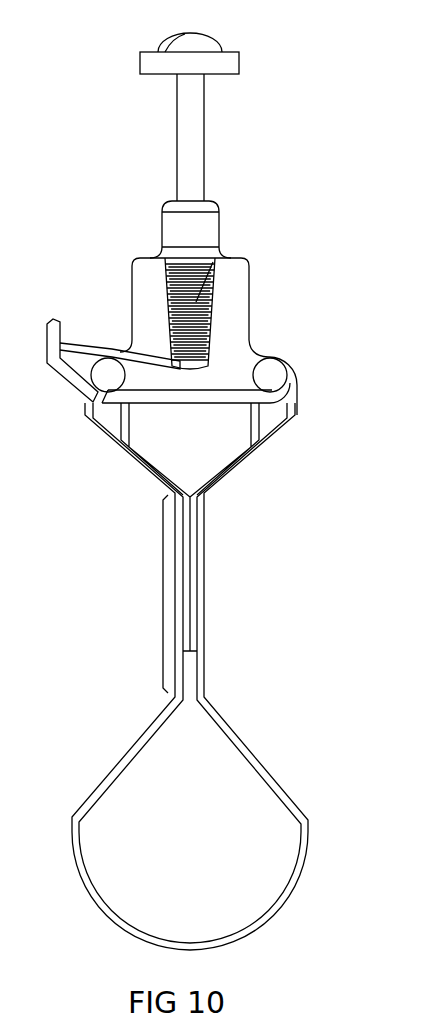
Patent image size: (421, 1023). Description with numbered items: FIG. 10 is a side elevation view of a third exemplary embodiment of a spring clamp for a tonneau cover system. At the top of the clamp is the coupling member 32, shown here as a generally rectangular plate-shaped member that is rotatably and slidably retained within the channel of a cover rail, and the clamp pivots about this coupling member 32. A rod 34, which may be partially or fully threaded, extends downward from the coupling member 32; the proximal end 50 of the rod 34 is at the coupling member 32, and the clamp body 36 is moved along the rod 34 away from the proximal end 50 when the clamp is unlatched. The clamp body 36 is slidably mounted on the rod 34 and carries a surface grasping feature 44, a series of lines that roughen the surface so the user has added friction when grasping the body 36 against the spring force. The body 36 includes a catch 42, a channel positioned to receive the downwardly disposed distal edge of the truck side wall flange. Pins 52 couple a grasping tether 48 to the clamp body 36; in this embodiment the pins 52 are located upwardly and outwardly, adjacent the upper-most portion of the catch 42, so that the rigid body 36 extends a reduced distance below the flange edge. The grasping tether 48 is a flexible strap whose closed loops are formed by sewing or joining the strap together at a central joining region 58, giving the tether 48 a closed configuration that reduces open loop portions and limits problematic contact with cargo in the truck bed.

The proximal end 50 is at (203, 46).
The coupling member 32 is at (140, 63).
The rod 34 is at (181, 138).
The surface grasping feature 44 is at (213, 262).
The clamp body 36 is at (228, 350).
The catch 42 is at (113, 352).
The pin 52 is at (270, 377).
The grasping tether 48 is at (230, 577).
The central joining region 58 is at (156, 592).